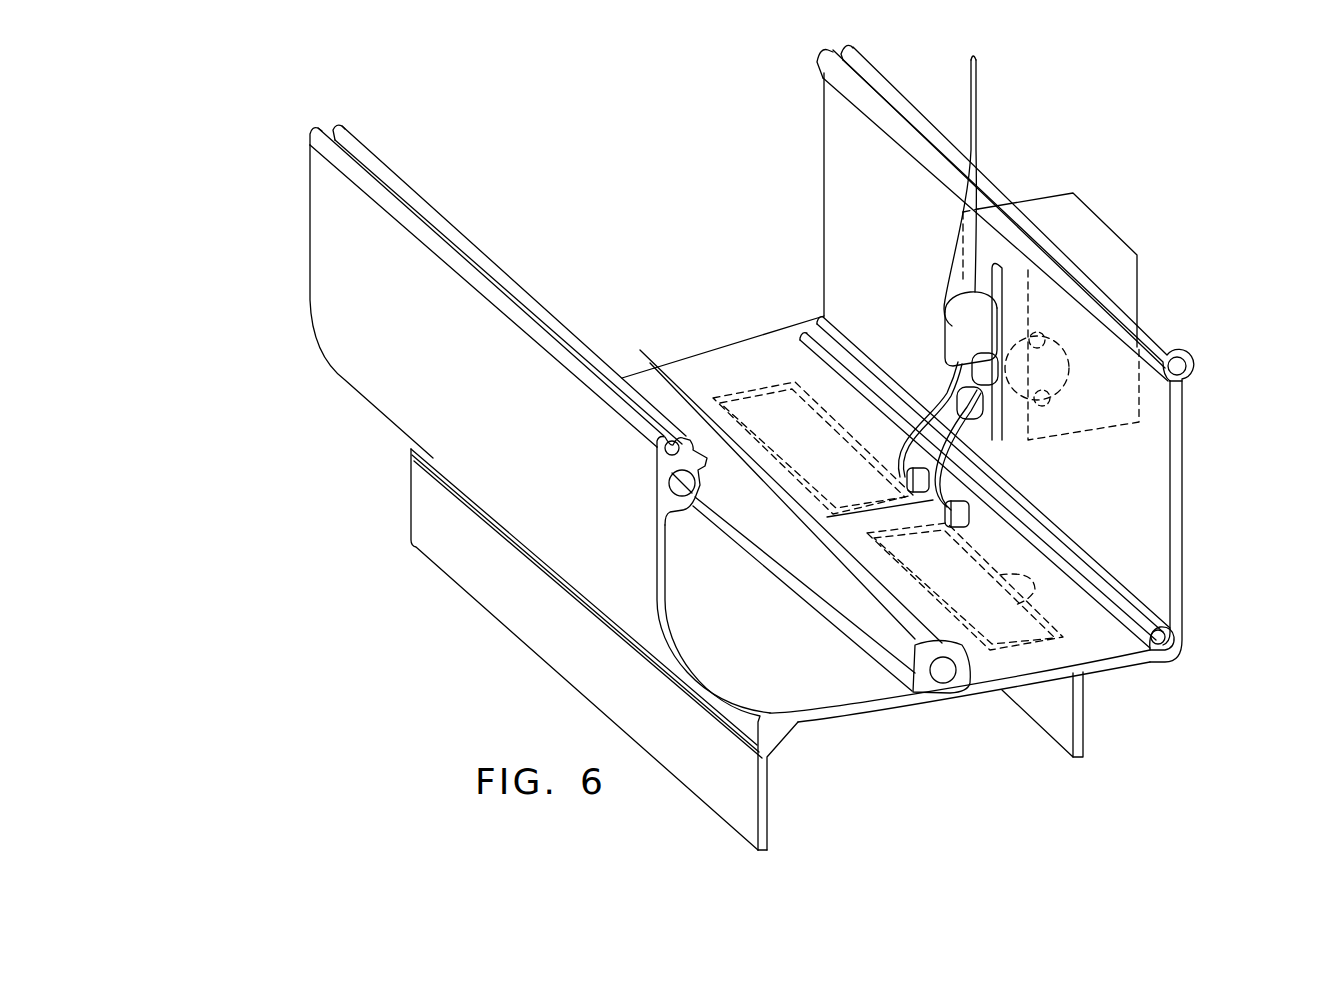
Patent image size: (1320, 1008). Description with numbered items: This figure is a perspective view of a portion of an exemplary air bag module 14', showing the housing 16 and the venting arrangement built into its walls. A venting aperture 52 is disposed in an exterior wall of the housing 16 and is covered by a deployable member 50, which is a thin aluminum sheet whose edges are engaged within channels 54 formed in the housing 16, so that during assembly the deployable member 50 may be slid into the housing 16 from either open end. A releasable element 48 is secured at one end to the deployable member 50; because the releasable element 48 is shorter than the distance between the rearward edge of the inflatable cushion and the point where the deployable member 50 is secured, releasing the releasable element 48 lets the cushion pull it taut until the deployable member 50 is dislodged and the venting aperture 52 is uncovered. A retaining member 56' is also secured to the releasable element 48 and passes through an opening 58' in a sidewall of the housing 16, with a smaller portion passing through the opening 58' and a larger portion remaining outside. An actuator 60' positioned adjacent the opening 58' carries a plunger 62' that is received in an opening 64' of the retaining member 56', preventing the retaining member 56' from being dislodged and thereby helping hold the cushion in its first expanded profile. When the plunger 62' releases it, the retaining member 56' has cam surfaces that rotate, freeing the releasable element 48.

The air bag module 14' is at (1141, 305).
The housing 16 is at (340, 208).
The releasable element 48 is at (976, 105).
The deployable member 50 is at (723, 378).
The venting aperture 52 is at (781, 385).
The channels 54 is at (1137, 667).
The retaining member 56' is at (1059, 409).
The opening 58' is at (1091, 352).
The actuator 60' is at (1087, 308).
The plunger 62' is at (1134, 336).
The opening of retaining member 64' is at (1142, 394).